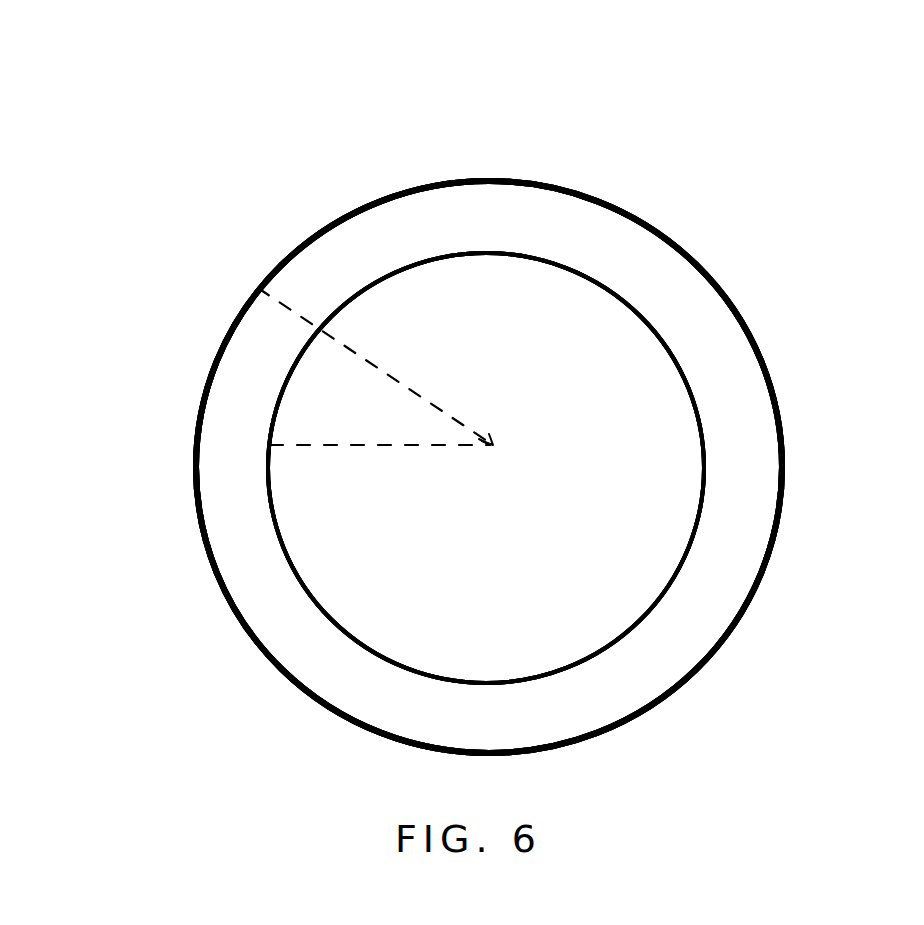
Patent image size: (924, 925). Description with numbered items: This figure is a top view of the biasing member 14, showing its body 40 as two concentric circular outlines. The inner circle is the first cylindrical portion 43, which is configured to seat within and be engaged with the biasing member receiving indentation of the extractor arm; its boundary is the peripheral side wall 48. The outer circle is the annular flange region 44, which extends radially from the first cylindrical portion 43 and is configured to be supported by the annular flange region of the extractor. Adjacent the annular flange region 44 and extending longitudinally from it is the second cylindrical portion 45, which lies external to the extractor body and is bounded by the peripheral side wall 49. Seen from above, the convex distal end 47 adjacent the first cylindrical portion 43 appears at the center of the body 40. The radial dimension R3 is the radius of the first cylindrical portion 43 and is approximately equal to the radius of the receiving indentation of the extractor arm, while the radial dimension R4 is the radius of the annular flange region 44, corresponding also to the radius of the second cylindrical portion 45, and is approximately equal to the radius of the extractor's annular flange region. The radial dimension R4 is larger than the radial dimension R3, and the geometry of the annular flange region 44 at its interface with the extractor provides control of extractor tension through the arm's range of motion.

The biasing member 14 is at (797, 72).
The body 40 is at (155, 472).
The first cylindrical portion 43 is at (333, 565).
The annular flange region 44 is at (722, 382).
The second cylindrical portion 45 is at (282, 643).
The convex distal end 47 is at (572, 445).
The peripheral side wall 48 is at (397, 665).
The peripheral side wall 49 is at (310, 702).
The radial dimension R3 is at (362, 446).
The radial dimension R4 is at (383, 376).